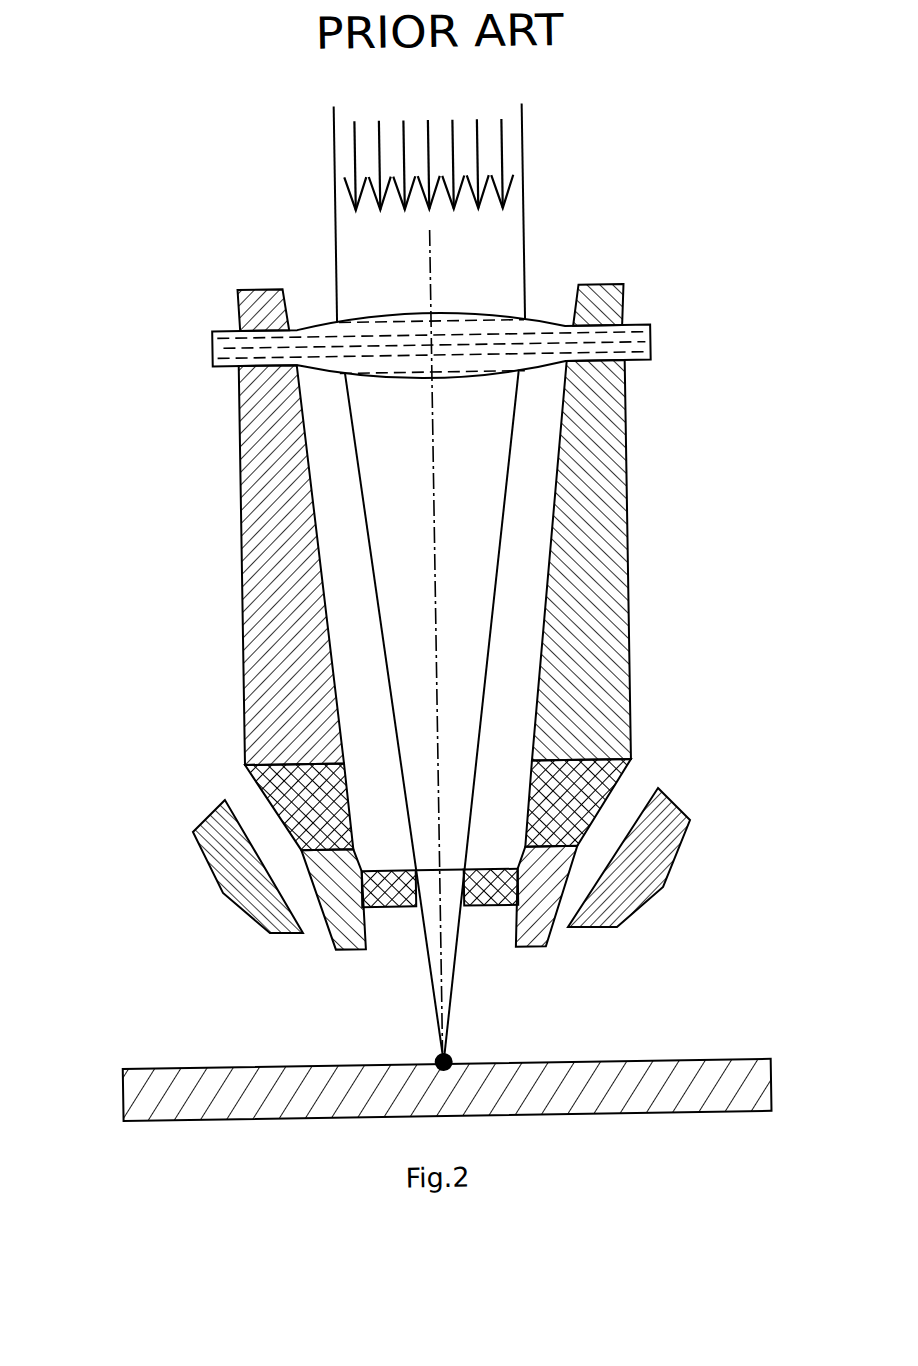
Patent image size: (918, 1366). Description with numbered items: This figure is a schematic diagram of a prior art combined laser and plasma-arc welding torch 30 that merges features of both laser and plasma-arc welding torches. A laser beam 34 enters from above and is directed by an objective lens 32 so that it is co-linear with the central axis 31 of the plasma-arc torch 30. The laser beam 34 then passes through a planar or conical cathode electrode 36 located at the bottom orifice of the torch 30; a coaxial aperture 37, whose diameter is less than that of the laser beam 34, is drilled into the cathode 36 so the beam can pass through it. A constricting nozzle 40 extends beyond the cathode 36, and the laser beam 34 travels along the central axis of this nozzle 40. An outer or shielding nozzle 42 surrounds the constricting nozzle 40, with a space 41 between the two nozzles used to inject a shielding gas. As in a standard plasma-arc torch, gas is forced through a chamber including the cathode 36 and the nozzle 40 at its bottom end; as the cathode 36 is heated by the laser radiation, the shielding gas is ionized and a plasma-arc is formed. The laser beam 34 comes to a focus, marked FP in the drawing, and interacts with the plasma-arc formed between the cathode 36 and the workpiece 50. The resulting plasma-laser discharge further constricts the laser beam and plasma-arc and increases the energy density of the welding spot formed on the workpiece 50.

The plasma-arc torch 30 is at (285, 521).
The central axis 31 is at (437, 445).
The objective lens 32 is at (342, 328).
The laser beam 34 is at (501, 179).
The cathode electrode 36 is at (503, 938).
The coaxial aperture 37 is at (295, 944).
The constricting nozzle 40 is at (535, 770).
The space 41 is at (186, 803).
The shielding nozzle 42 is at (637, 881).
The workpiece 50 is at (478, 1034).
The focal point FP is at (477, 1046).